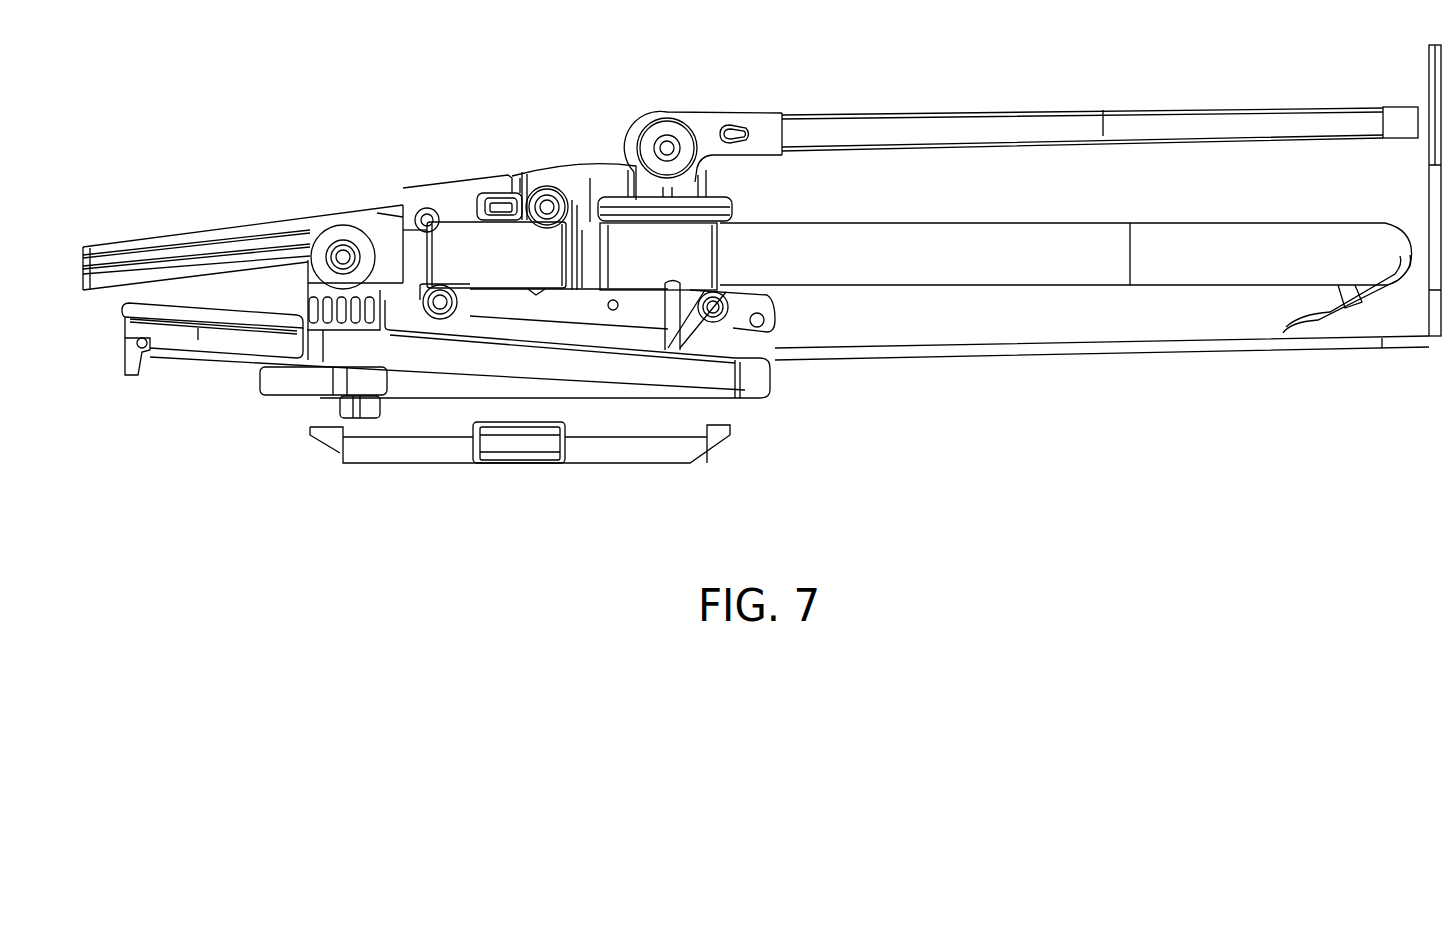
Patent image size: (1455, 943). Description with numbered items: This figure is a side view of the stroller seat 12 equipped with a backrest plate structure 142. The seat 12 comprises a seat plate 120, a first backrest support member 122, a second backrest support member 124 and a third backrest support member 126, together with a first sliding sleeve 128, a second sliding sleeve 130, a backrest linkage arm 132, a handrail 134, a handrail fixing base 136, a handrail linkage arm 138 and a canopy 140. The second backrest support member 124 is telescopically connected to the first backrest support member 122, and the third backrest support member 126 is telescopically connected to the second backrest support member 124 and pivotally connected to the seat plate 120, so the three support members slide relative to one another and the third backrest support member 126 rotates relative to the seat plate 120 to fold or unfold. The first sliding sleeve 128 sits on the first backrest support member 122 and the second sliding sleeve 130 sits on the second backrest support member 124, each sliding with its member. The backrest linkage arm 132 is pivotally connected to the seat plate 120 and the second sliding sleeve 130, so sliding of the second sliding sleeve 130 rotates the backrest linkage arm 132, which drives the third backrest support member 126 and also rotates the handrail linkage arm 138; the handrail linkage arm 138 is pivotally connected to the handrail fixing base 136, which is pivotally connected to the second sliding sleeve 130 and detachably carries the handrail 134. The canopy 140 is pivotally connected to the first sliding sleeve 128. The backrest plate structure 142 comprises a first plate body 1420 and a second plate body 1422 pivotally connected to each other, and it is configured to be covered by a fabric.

The seat 12 is at (480, 82).
The seat plate 120 is at (170, 313).
The first backrest support member 122 is at (1216, 245).
The second backrest support member 124 is at (585, 247).
The third backrest support member 126 is at (410, 252).
The first sliding sleeve 128 is at (682, 240).
The second sliding sleeve 130 is at (452, 237).
The backrest linkage arm 132 is at (582, 305).
The handrail 134 is at (195, 233).
The handrail fixing base 136 is at (560, 177).
The handrail linkage arm 138 is at (758, 336).
The canopy 140 is at (976, 120).
The backrest plate structure 142 is at (1318, 410).
The first plate body 1420 is at (1438, 278).
The second plate body 1422 is at (1350, 343).